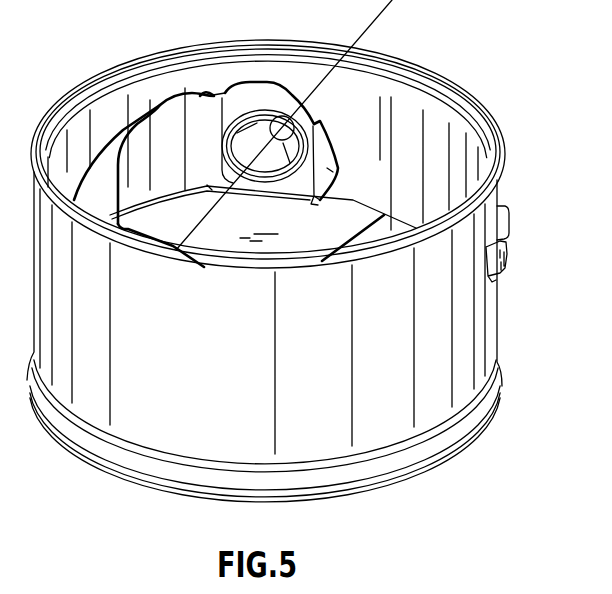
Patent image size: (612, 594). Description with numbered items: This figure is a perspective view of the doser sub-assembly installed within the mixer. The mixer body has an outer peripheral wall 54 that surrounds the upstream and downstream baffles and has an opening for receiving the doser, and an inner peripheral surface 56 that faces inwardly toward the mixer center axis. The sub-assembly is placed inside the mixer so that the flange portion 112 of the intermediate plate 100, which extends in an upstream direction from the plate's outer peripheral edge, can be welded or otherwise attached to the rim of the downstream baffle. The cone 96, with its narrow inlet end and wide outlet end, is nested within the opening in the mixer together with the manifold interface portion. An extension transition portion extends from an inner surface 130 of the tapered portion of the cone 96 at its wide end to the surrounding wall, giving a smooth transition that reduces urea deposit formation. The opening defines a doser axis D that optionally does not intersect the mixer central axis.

The outer peripheral wall 54 is at (469, 358).
The inner peripheral surface 56 is at (438, 127).
The flange portion 112 is at (148, 137).
The inner surface 130 is at (247, 140).
The cone 96 is at (273, 157).
The intermediate plate 100 is at (222, 240).
The doser axis D is at (386, 0).